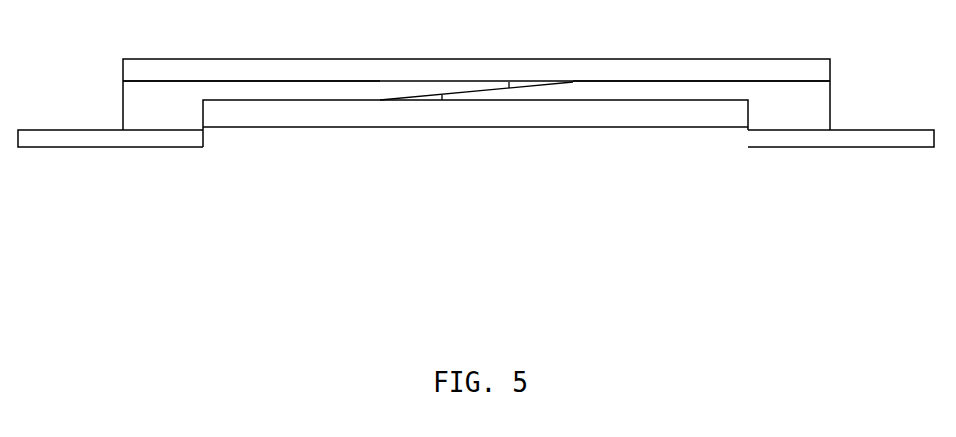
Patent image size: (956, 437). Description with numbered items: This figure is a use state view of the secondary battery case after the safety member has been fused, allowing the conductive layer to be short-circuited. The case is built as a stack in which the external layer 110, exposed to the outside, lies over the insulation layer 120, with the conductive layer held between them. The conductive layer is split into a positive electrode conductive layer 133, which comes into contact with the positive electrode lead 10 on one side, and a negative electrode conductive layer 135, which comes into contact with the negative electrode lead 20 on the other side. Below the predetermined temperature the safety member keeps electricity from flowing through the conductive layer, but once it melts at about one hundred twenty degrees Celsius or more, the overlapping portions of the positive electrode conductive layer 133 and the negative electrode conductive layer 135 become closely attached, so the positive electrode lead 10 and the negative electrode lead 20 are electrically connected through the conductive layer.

The positive electrode lead 10 is at (48, 148).
The negative electrode lead 20 is at (896, 148).
The external layer 110 is at (475, 65).
The insulation layer 120 is at (475, 128).
The positive electrode conductive layer 133 is at (252, 92).
The negative electrode conductive layer 135 is at (713, 92).